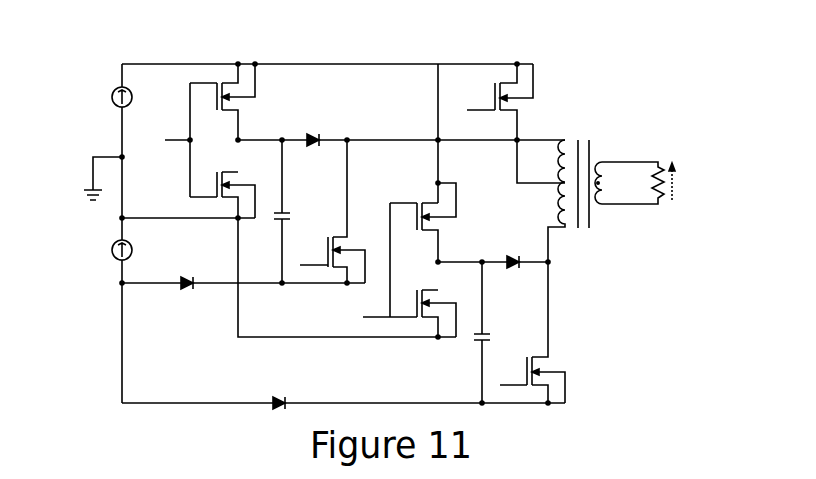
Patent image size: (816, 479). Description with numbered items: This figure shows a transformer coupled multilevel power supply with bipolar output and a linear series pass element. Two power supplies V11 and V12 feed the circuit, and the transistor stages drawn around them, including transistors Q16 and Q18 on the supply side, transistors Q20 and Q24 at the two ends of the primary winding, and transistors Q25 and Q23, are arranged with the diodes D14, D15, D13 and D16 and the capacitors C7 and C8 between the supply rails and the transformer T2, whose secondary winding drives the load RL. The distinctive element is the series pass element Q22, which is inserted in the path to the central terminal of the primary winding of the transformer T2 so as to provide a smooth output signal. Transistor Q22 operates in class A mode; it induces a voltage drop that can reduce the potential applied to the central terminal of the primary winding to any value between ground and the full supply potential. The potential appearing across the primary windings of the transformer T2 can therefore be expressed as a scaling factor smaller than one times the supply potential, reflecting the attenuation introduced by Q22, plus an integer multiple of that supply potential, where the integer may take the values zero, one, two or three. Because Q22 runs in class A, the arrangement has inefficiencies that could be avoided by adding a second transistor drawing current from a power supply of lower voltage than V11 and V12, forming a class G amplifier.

The power supply V11 is at (112, 97).
The power supply V12 is at (132, 246).
The transistor Q16 is at (222, 102).
The transistor Q18 is at (222, 195).
The diode D14 is at (187, 278).
The capacitor C7 is at (288, 211).
The diode D15 is at (314, 134).
The transistor Q25 is at (332, 211).
The series pass element Q22 is at (423, 222).
The transistor Q23 is at (423, 313).
The diode D16 is at (281, 397).
The capacitor C8 is at (488, 332).
The diode D13 is at (514, 256).
The transistor Q20 is at (516, 123).
The transistor Q24 is at (532, 332).
The transformer T2 is at (575, 193).
The load resistor RL is at (651, 183).